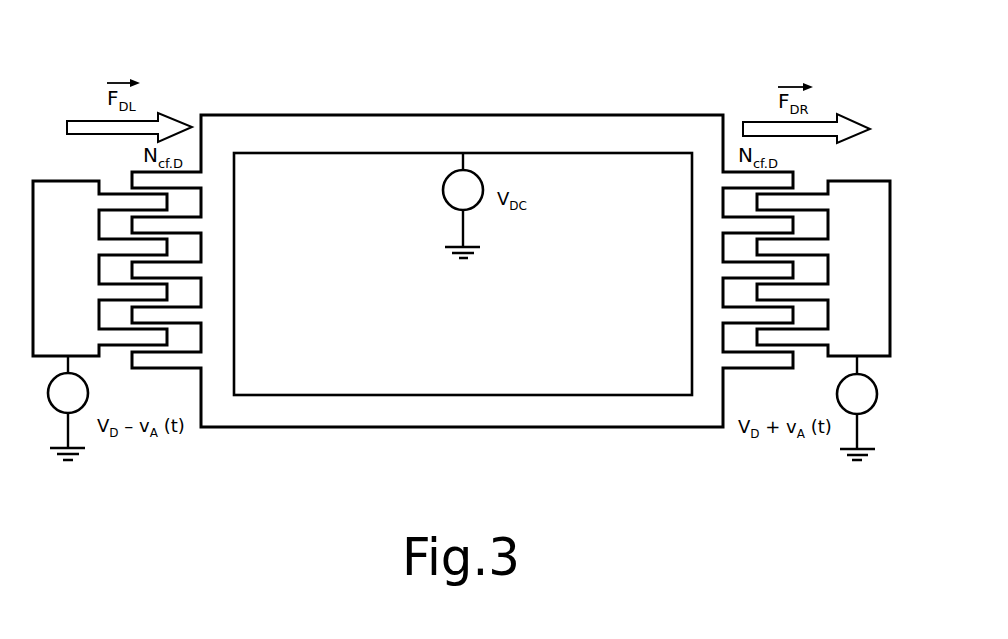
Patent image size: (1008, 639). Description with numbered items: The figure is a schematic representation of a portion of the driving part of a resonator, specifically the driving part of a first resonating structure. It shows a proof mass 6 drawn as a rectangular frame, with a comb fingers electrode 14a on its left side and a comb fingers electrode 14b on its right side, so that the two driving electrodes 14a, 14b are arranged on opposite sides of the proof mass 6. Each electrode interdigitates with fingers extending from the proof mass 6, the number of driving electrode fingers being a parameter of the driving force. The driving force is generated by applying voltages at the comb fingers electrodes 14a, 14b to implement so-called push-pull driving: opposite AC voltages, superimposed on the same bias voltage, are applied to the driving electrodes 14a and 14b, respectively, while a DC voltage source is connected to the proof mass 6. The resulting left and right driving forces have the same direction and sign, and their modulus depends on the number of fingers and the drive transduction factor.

The proof mass 6 is at (309, 115).
The comb fingers electrode 14a is at (57, 193).
The comb fingers electrode 14b is at (868, 193).